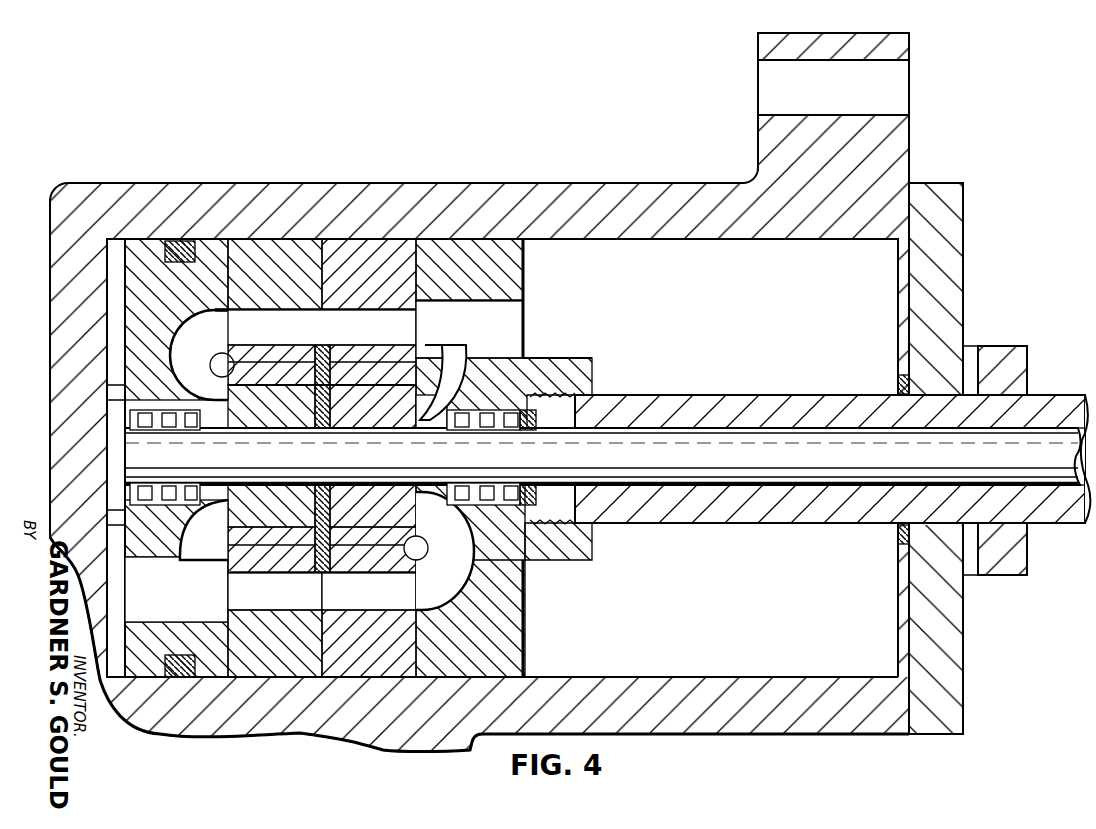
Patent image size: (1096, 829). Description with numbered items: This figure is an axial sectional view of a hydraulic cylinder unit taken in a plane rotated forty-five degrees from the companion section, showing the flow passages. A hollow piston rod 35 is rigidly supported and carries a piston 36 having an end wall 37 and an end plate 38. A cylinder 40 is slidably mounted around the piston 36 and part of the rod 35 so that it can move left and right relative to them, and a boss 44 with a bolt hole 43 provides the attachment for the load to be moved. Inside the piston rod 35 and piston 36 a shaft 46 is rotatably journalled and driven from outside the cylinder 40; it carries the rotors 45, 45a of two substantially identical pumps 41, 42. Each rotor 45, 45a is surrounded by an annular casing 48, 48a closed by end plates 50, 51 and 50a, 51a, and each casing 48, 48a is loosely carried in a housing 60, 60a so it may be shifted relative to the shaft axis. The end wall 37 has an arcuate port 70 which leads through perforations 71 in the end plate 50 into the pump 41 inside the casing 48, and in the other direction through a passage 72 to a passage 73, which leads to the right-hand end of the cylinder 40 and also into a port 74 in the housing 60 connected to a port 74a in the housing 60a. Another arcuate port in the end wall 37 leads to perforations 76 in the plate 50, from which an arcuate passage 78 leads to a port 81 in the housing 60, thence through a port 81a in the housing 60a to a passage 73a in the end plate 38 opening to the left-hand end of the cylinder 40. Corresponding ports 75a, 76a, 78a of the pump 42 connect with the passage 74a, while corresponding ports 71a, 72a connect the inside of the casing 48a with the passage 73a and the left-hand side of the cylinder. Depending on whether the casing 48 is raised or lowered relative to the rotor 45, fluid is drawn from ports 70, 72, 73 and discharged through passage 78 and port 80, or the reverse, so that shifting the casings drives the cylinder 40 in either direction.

The hollow piston rod 35 is at (776, 388).
The piston 36 is at (560, 354).
The end wall 37 is at (525, 263).
The end plate 38 is at (137, 284).
The cylinder 40 is at (556, 182).
The pump 41 is at (382, 430).
The pump 42 is at (290, 430).
The bolt hole 43 is at (772, 62).
The boss 44 is at (772, 52).
The rotor 45 is at (373, 506).
The rotor 45a is at (271, 506).
The shaft 46 is at (603, 456).
The annular casing 48 is at (345, 352).
The annular casing 48a is at (262, 352).
The end plate 50 is at (426, 348).
The end plate 50a is at (348, 566).
The end plate 51 is at (325, 356).
The end plate 51a is at (322, 548).
The housing 60 is at (372, 240).
The housing 60a is at (262, 240).
The arcuate port 70 is at (452, 432).
The perforations 71 is at (431, 402).
The port 71a is at (236, 500).
The passage or port 72 is at (457, 388).
The port 72a is at (232, 556).
The port or passage 73 is at (469, 329).
The passage 73a is at (200, 560).
The port 74 is at (410, 302).
The port 74a is at (240, 265).
The port 75a is at (232, 405).
The perforations 76 is at (392, 430).
The port 76a is at (262, 428).
The arcuate passage 78 is at (428, 554).
The port 78a is at (202, 355).
The port 80 is at (446, 586).
The port 81 is at (369, 625).
The port 81a is at (275, 625).